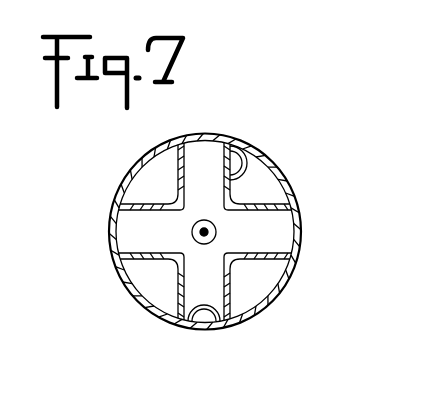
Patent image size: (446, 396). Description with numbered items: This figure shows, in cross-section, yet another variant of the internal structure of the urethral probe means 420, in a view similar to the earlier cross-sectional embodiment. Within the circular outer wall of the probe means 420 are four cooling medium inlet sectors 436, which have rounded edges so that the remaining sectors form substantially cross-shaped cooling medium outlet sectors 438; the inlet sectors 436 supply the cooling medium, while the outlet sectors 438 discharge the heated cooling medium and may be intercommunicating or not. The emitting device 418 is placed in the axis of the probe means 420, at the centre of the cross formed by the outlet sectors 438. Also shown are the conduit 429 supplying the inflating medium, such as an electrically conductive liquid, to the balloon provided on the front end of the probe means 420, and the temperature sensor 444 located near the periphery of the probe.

The emitting device 418 is at (194, 228).
The probe means 420 is at (292, 278).
The conduit supplying the inflating medium 429 is at (233, 157).
The cooling medium inlet sectors 436 is at (150, 172).
The cooling medium outlet sectors 438 is at (200, 168).
The temperature sensor 444 is at (198, 318).